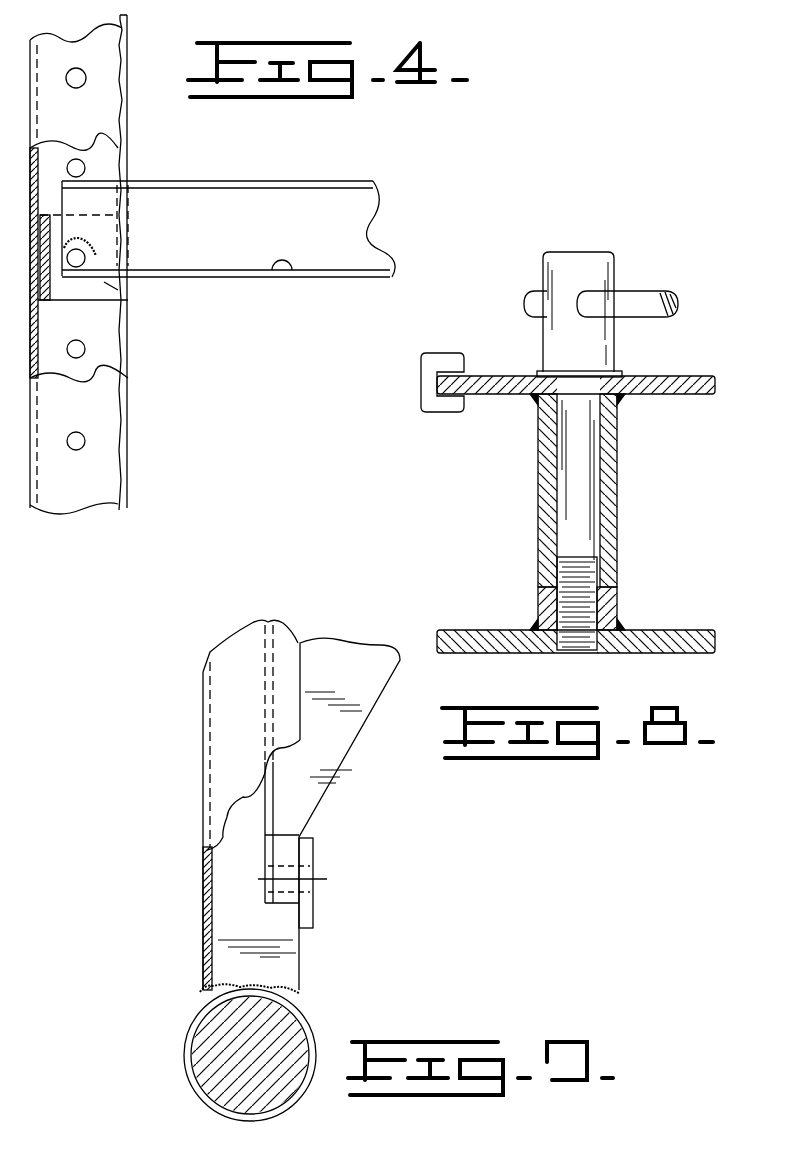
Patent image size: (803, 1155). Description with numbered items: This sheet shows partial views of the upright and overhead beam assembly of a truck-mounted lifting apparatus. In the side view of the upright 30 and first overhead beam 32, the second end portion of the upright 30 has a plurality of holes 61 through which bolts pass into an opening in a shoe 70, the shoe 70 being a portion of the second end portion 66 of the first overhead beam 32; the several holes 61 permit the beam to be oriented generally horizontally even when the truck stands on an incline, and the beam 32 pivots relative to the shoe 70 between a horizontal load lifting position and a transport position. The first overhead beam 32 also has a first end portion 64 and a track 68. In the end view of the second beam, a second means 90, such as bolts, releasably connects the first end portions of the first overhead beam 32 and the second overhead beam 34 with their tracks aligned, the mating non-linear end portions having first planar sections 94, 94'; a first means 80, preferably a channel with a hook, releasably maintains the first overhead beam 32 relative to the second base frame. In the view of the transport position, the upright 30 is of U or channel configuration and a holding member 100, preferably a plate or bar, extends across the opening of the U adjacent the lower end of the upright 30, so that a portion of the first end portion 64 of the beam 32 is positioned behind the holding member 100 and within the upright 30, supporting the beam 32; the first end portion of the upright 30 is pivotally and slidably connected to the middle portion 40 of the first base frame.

In FIG. 4, the upright 30 is at (146, 104).
In FIG. 9, the upright 30 is at (188, 746).
In FIG. 4, the first overhead beam 32 is at (347, 147).
In FIG. 9, the first overhead beam 32 is at (366, 756).
In FIG. 8, the second overhead beam 34 is at (668, 368).
In FIG. 9, the middle portion 40 is at (268, 1067).
In FIG. 4, the holes 61 is at (84, 72).
In FIG. 9, the first end portion 64 is at (252, 860).
In FIG. 4, the second end portion 66 is at (255, 143).
In FIG. 4, the track 68 is at (276, 272).
In FIG. 4, the shoe 70 is at (93, 300).
In FIG. 4, the first means 80 is at (118, 288).
In FIG. 8, the first means 80 is at (430, 353).
In FIG. 8, the second means 90 is at (578, 252).
In FIG. 8, the first planar section 94 is at (621, 597).
In FIG. 8, the first planar section 94' is at (539, 602).
In FIG. 9, the holding member 100 is at (313, 855).